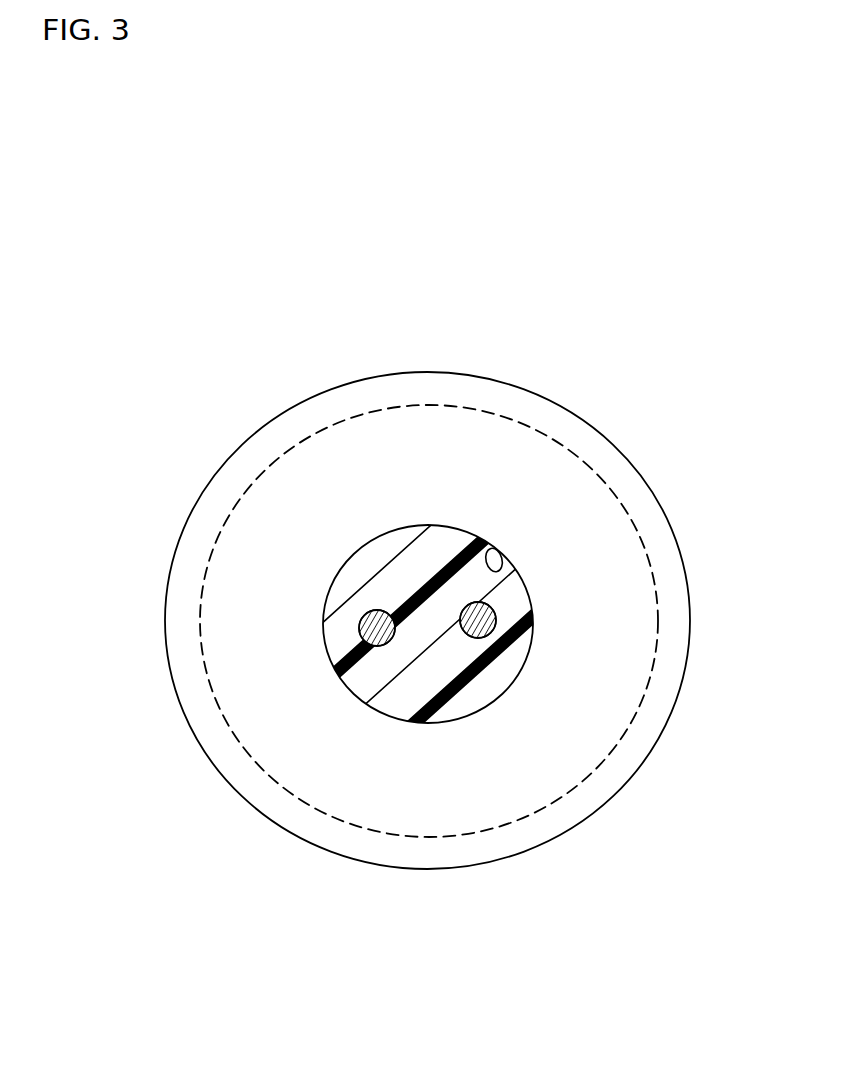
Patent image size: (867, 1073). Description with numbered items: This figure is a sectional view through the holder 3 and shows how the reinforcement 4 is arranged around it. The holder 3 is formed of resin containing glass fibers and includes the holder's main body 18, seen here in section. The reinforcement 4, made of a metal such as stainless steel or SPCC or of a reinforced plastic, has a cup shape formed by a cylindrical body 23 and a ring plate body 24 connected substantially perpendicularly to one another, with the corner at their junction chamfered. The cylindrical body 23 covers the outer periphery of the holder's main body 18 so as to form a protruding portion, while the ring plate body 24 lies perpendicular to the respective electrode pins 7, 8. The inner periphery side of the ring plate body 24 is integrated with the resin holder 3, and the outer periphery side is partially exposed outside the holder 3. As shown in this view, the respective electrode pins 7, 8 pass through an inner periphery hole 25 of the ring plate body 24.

The holder 3 is at (453, 588).
The reinforcement 4 is at (160, 822).
The electrode pin 7 is at (337, 648).
The electrode pin 8 is at (480, 602).
The holder's main body 18 is at (498, 662).
The cylindrical body 23 is at (255, 792).
The ring plate body 24 is at (317, 797).
The inner periphery hole 25 is at (503, 563).